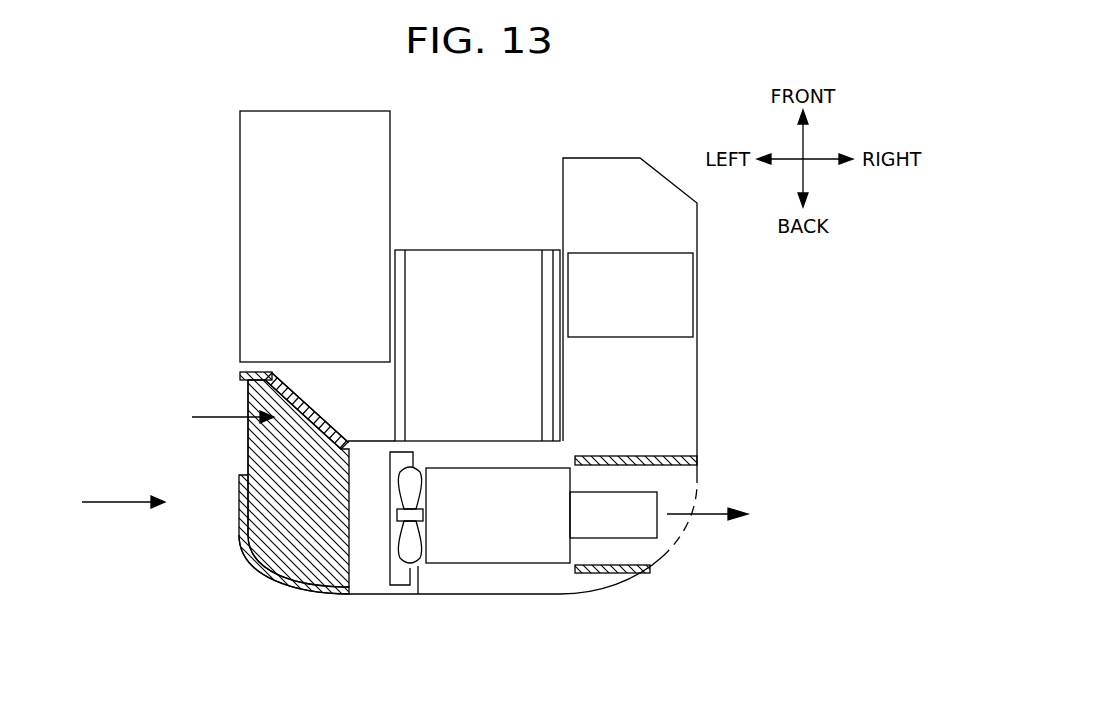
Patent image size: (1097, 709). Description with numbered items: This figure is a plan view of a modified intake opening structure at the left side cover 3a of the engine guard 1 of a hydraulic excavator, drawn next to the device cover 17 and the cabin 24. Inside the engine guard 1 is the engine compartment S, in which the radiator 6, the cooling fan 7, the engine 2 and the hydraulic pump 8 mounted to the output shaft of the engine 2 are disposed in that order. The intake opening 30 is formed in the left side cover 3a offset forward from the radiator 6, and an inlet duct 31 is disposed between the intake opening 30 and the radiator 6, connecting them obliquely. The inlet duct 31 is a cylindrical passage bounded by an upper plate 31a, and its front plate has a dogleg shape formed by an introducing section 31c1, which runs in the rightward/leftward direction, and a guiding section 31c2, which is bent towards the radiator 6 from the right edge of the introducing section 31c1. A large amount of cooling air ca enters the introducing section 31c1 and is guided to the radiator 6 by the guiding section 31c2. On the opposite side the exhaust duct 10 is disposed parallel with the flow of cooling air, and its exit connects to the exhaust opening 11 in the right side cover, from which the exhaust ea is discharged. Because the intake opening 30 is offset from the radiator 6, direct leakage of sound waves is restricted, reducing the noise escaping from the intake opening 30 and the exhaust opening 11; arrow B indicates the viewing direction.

The engine guard 1 is at (500, 595).
The engine 2 is at (532, 545).
The left side cover 3a is at (238, 497).
The radiator 6 is at (370, 575).
The cooling fan 7 is at (420, 567).
The hydraulic pump 8 is at (647, 527).
The exhaust duct 10 is at (676, 441).
The exhaust opening 11 is at (700, 485).
The device cover 17 is at (700, 358).
The cabin 24 is at (324, 227).
The intake opening 30 is at (237, 442).
The inlet duct 31 is at (330, 405).
The upper plate 31a is at (277, 587).
The introducing section 31c1 is at (264, 373).
The guiding section 31c2 is at (304, 392).
The engine compartment S is at (465, 580).
The cooling air ca is at (205, 416).
The exhaust ea is at (717, 517).
The viewing direction B is at (112, 502).